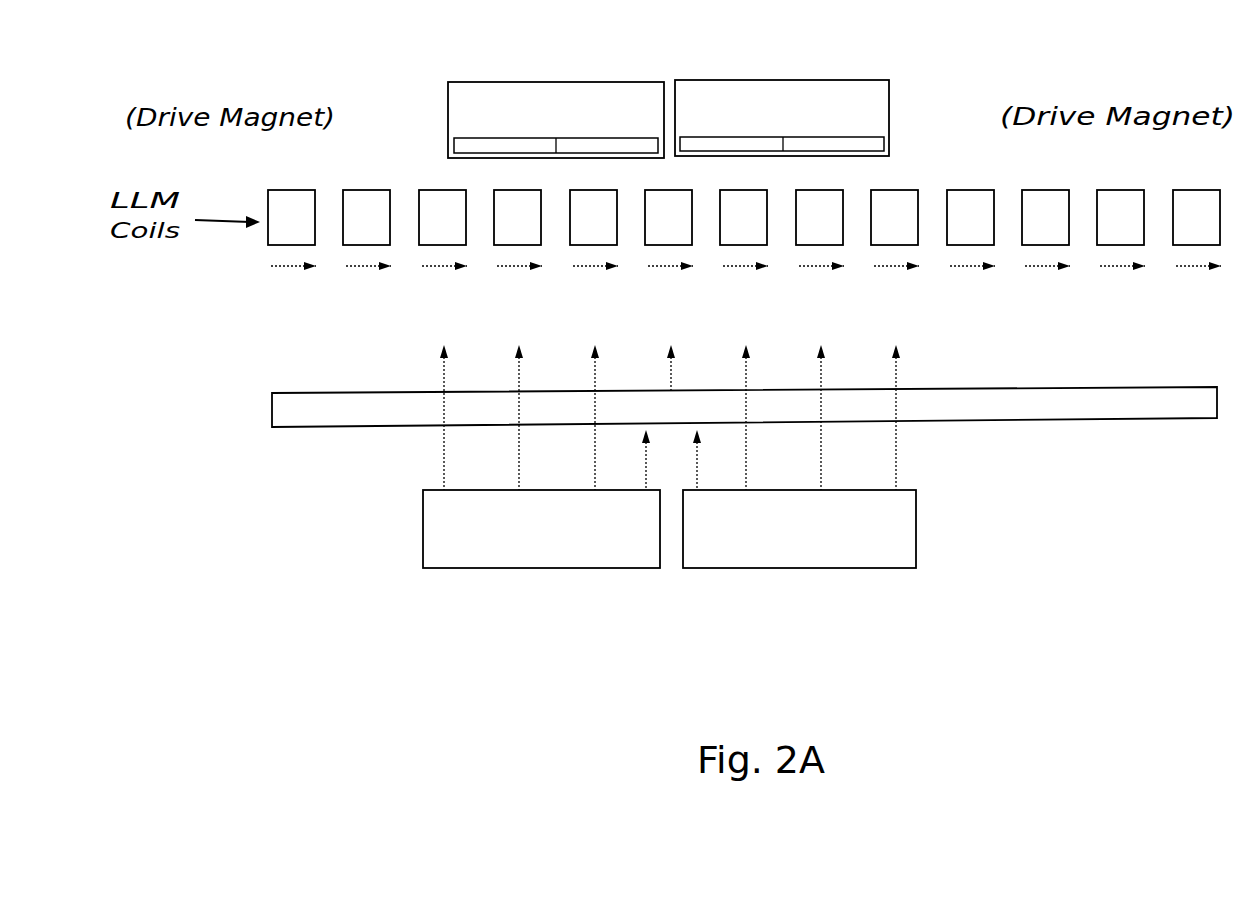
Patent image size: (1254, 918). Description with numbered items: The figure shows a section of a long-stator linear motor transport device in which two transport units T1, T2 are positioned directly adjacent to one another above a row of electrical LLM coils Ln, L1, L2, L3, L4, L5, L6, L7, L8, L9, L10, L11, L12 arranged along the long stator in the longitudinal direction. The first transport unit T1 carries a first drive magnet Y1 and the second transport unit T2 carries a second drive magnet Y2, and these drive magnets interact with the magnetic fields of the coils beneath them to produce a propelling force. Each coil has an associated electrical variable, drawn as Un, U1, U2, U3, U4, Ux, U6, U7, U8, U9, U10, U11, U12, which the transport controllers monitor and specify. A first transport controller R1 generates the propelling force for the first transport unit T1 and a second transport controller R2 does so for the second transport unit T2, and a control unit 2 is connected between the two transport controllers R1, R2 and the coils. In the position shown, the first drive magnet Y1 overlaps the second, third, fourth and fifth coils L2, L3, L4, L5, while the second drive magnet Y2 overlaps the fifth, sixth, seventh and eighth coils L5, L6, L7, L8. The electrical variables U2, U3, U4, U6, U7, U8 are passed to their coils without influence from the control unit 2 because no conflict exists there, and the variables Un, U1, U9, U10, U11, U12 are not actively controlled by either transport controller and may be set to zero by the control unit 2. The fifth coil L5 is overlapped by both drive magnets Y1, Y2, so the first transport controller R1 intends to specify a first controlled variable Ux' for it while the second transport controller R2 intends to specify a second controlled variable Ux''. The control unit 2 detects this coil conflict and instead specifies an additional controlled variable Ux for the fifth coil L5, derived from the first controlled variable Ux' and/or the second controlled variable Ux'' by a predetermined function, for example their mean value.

The first transport unit T1 is at (448, 107).
The second transport unit T2 is at (892, 100).
The first drive magnet Y1 is at (448, 148).
The second drive magnet Y2 is at (889, 145).
The control unit 2 is at (1143, 418).
The first transport controller R1 is at (541, 563).
The second transport controller R2 is at (799, 562).
The LLM coil Ln is at (291, 217).
The first LLM coil L1 is at (366, 217).
The second LLM coil L2 is at (442, 217).
The third LLM coil L3 is at (517, 217).
The fourth LLM coil L4 is at (593, 217).
The fifth LLM coil L5 is at (668, 217).
The sixth LLM coil L6 is at (743, 217).
The seventh LLM coil L7 is at (819, 217).
The eighth LLM coil L8 is at (894, 217).
The LLM coil L9 is at (970, 217).
The LLM coil L10 is at (1045, 217).
The LLM coil L11 is at (1120, 217).
The LLM coil L12 is at (1196, 217).
The electrical variable Un is at (293, 284).
The electrical variable U1 is at (368, 284).
The electrical variable U2 is at (444, 284).
The electrical variable U3 is at (519, 284).
The electrical variable U4 is at (595, 284).
The additional controlled variable Ux is at (670, 284).
The electrical variable U6 is at (745, 284).
The electrical variable U7 is at (821, 284).
The electrical variable U8 is at (896, 284).
The electrical variable U9 is at (972, 284).
The electrical variable U10 is at (1047, 284).
The electrical variable U11 is at (1122, 284).
The electrical variable U12 is at (1198, 284).
The first controlled variable Ux' is at (631, 460).
The second controlled variable Ux'' is at (714, 460).